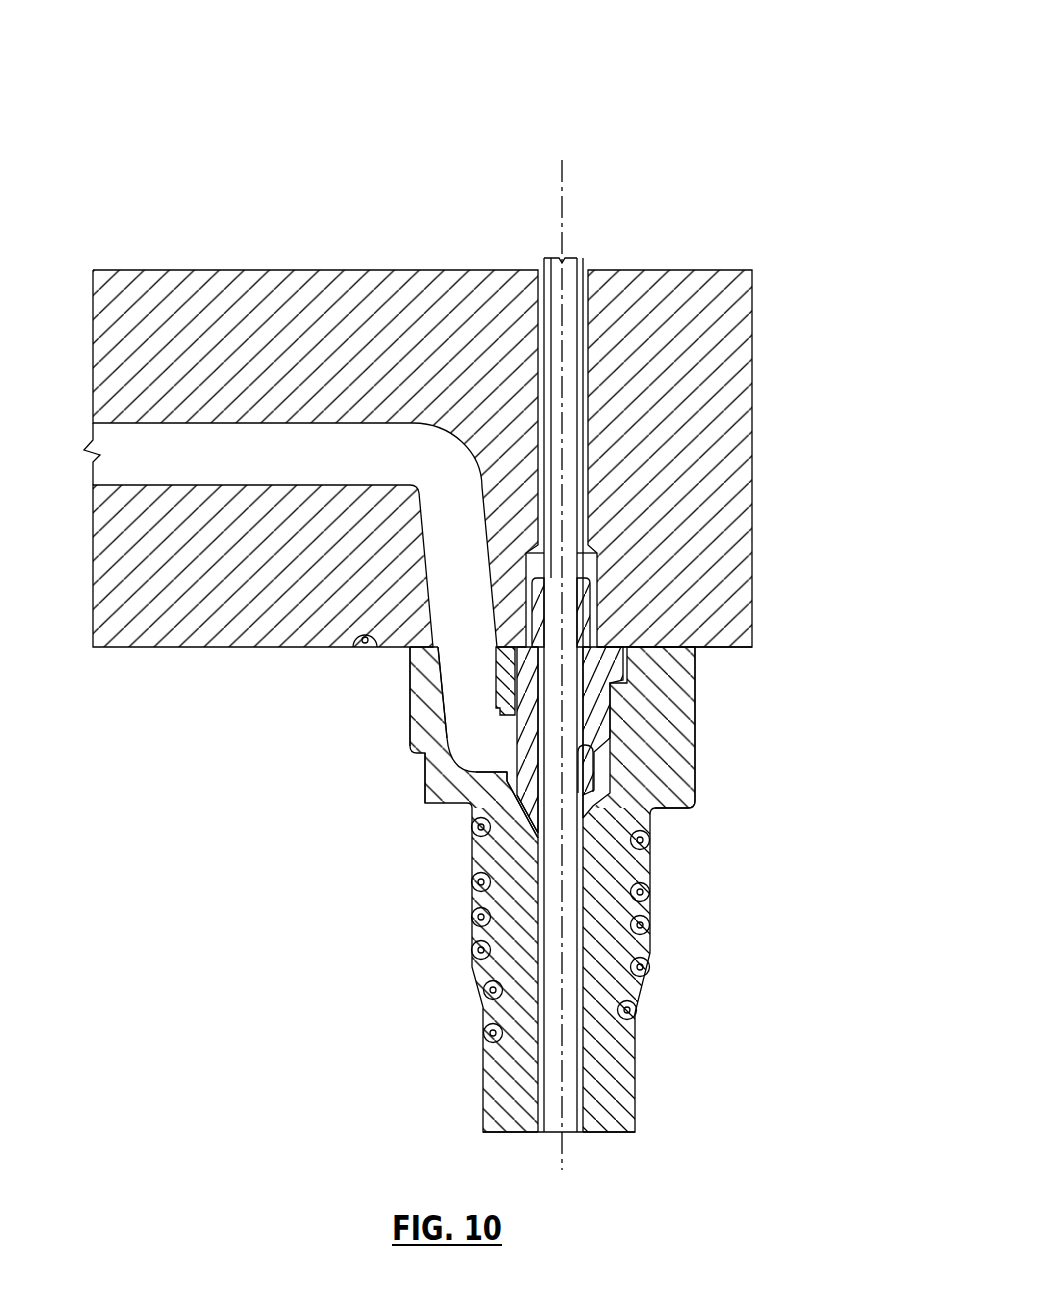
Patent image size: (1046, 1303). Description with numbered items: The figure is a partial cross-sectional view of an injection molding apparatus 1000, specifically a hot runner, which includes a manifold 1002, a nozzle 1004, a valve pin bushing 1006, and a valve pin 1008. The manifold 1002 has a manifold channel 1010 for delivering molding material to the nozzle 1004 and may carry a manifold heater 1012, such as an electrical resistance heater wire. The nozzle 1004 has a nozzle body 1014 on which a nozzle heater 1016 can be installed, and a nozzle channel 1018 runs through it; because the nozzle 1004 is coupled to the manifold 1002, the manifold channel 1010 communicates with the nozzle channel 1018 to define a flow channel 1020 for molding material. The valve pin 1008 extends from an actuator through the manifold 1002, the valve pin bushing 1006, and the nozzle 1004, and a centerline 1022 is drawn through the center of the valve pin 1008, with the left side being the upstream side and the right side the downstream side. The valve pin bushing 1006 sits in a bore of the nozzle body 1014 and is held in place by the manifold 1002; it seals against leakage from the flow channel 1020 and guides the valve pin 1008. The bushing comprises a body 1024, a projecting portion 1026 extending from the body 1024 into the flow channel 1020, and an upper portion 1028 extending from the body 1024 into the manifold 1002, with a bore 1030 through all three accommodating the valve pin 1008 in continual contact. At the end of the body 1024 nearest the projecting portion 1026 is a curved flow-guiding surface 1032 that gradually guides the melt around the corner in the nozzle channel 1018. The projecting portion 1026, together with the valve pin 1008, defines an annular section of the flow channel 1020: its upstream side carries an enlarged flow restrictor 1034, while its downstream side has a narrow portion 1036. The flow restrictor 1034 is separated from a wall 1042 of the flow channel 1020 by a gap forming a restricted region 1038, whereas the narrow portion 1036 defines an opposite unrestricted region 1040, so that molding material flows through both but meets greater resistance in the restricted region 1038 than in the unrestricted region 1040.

The injection molding apparatus 1000 is at (769, 140).
The manifold 1002 is at (194, 284).
The nozzle 1004 is at (703, 707).
The valve pin bushing 1006 is at (626, 638).
The valve pin 1008 is at (567, 1112).
The manifold channel 1010 is at (447, 613).
The manifold heater 1012 is at (358, 650).
The nozzle body 1014 is at (676, 740).
The nozzle heater 1016 is at (640, 1010).
The nozzle channel 1018 is at (447, 705).
The flow channel 1020 is at (272, 710).
The centerline 1022 is at (562, 200).
The body 1024 is at (615, 692).
The projecting portion 1026 is at (314, 782).
The upper portion 1028 is at (590, 596).
The bore 1030 is at (576, 612).
The flow-guiding surface 1032 is at (592, 762).
The flow restrictor 1034 is at (523, 733).
The narrow portion 1036 is at (547, 753).
The restricted region 1038 is at (510, 797).
The unrestricted region 1040 is at (595, 797).
The wall 1042 is at (519, 816).